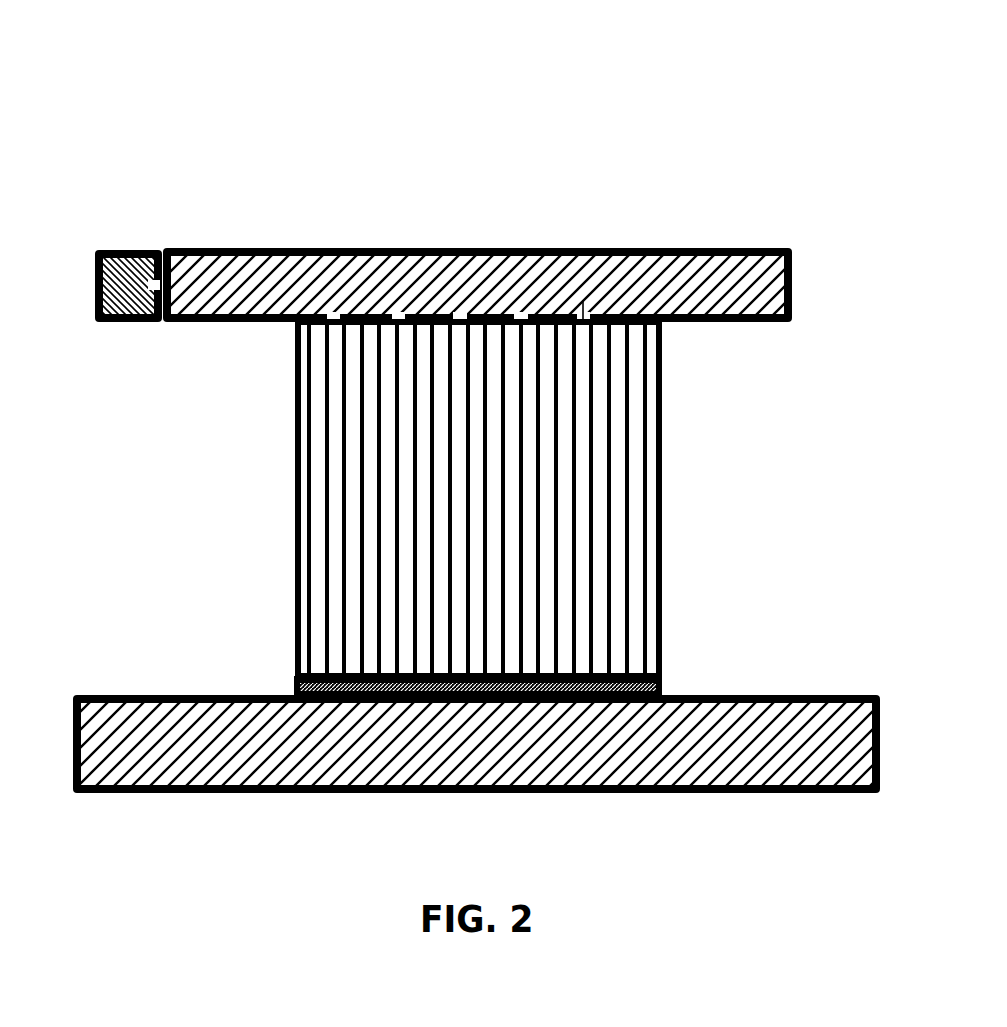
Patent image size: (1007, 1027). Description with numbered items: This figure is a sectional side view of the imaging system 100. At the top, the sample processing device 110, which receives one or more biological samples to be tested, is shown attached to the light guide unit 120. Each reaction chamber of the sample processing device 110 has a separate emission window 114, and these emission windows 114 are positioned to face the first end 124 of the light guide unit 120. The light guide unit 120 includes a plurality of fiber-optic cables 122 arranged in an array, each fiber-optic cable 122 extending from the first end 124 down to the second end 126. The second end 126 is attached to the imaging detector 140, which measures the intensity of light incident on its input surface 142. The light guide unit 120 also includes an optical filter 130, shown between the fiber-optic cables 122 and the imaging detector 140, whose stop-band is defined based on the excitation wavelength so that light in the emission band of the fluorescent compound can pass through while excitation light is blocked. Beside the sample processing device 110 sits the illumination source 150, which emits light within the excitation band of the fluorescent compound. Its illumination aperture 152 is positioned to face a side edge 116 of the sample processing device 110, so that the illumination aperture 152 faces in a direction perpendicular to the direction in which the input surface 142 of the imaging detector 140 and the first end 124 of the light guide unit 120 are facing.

The imaging system 100 is at (290, 90).
The sample processing device 110 is at (724, 248).
The emission window 114 is at (583, 300).
The side edge 116 is at (172, 268).
The light guide unit 120 is at (662, 488).
The fiber-optic cable 122 is at (630, 596).
The first end 124 is at (358, 332).
The second end 126 is at (605, 667).
The optical filter 130 is at (292, 694).
The imaging detector 140 is at (400, 793).
The input surface 142 is at (198, 680).
The illumination source 150 is at (92, 280).
The illumination aperture 152 is at (152, 285).